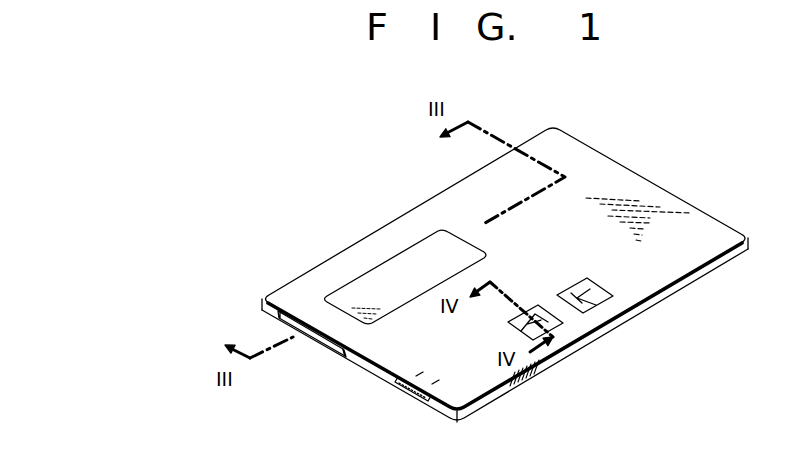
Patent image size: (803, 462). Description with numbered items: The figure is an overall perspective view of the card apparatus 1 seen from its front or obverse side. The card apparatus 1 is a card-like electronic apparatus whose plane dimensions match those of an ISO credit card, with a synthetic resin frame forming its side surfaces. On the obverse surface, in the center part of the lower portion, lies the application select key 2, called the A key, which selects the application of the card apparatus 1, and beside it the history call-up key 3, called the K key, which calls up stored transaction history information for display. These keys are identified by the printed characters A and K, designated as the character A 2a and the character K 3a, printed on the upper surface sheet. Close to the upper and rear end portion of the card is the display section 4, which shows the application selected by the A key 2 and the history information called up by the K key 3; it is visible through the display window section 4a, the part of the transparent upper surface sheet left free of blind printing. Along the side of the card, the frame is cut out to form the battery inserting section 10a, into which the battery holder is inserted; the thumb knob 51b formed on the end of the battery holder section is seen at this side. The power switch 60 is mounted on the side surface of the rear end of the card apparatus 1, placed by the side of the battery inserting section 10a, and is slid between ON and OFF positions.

The card apparatus 1 is at (633, 192).
The application select key 2 is at (572, 331).
The character A 2a is at (509, 329).
The history call-up key 3 is at (611, 304).
The character K 3a is at (593, 284).
The display section 4 is at (337, 293).
The display window section 4a is at (388, 272).
The battery inserting section 10a is at (350, 360).
The thumb knob 51b is at (307, 338).
The power switch 60 is at (394, 396).